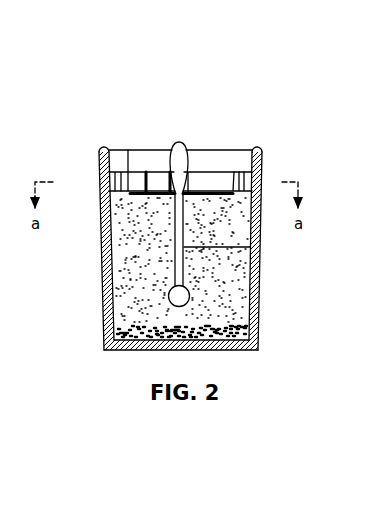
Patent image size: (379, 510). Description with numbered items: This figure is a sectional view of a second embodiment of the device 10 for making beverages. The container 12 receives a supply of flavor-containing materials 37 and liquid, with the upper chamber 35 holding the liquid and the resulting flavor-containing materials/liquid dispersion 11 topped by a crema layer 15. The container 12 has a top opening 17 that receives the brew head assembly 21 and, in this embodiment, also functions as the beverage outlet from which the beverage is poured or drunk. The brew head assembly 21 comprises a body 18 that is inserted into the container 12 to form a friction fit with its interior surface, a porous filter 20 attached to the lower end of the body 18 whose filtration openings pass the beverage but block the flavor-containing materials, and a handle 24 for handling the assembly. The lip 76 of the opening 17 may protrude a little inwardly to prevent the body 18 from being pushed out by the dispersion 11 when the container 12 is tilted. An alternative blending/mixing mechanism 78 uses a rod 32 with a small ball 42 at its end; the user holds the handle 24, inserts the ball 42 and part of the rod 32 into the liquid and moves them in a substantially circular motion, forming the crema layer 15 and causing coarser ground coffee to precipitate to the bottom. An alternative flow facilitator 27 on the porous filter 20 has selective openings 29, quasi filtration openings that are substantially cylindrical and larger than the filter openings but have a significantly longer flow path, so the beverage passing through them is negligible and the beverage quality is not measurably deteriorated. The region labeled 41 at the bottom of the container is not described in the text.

The device for making beverages 10 is at (281, 147).
The flavor-containing materials/liquid dispersion 11 is at (127, 237).
The container 12 is at (106, 305).
The top crema layer 15 is at (121, 202).
The top opening 17 is at (113, 163).
The body 18 is at (134, 172).
The porous filter 20 is at (146, 191).
The brew head assembly 21 is at (160, 175).
The handle 24 is at (187, 150).
The flow facilitator 27 is at (233, 164).
The selective openings 29 is at (243, 172).
The rod 32 is at (252, 247).
The upper chamber 35 is at (240, 298).
The flavor-containing materials 37 is at (235, 317).
The container bottom 41 is at (123, 347).
The small ball 42 is at (190, 296).
The lip 76 is at (100, 150).
The blending/mixing mechanism 78 is at (165, 261).